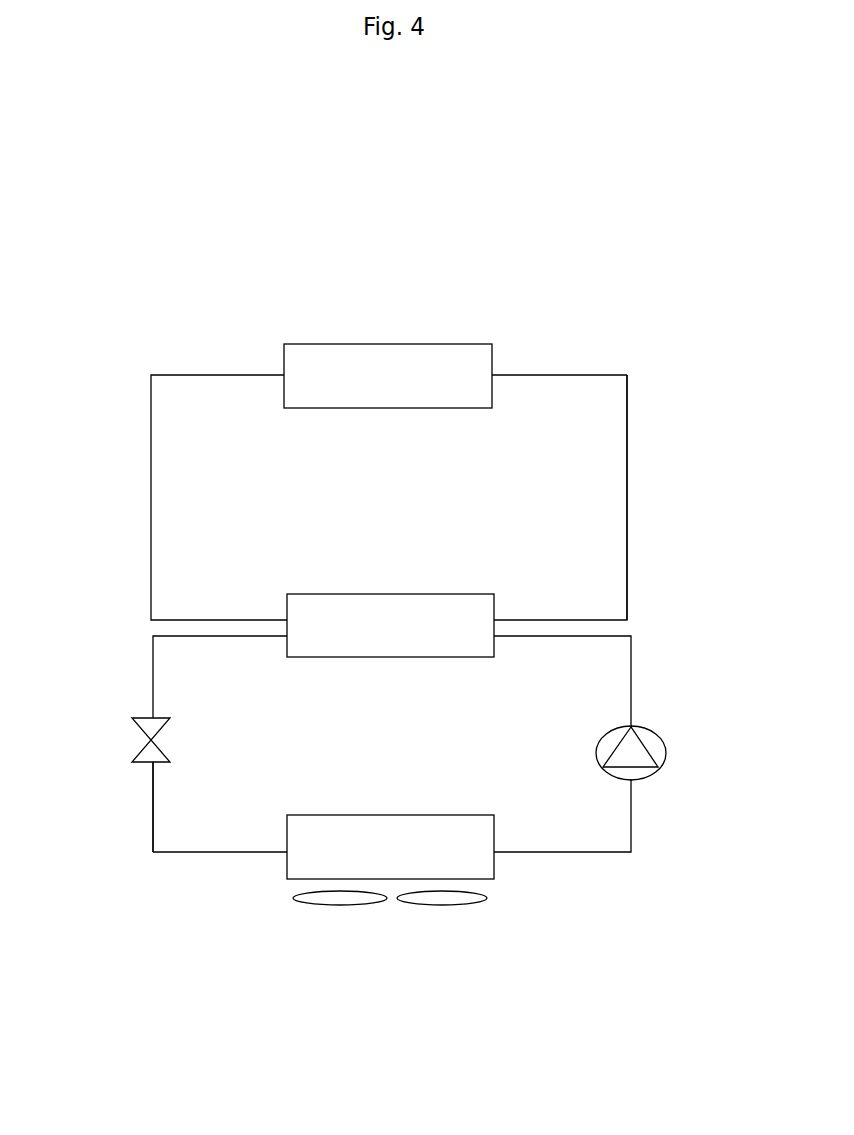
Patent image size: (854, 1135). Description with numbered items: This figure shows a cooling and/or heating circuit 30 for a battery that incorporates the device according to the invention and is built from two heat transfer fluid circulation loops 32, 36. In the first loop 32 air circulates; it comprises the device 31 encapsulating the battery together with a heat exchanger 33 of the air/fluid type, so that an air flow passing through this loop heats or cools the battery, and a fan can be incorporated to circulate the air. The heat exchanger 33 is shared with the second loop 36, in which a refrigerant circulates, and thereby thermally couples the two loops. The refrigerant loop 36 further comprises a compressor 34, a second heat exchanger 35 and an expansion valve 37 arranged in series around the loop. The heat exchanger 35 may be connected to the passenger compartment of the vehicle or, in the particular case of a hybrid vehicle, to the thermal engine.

The circuit 30 is at (586, 364).
The device encapsulating a battery 31 is at (343, 346).
The heat transfer fluid circulation loop 32 is at (628, 473).
The heat exchanger 33 is at (421, 594).
The compressor 34 is at (658, 737).
The heat exchanger 35 is at (287, 878).
The heat transfer fluid circulation loop 36 is at (152, 852).
The expansion valve 37 is at (137, 758).